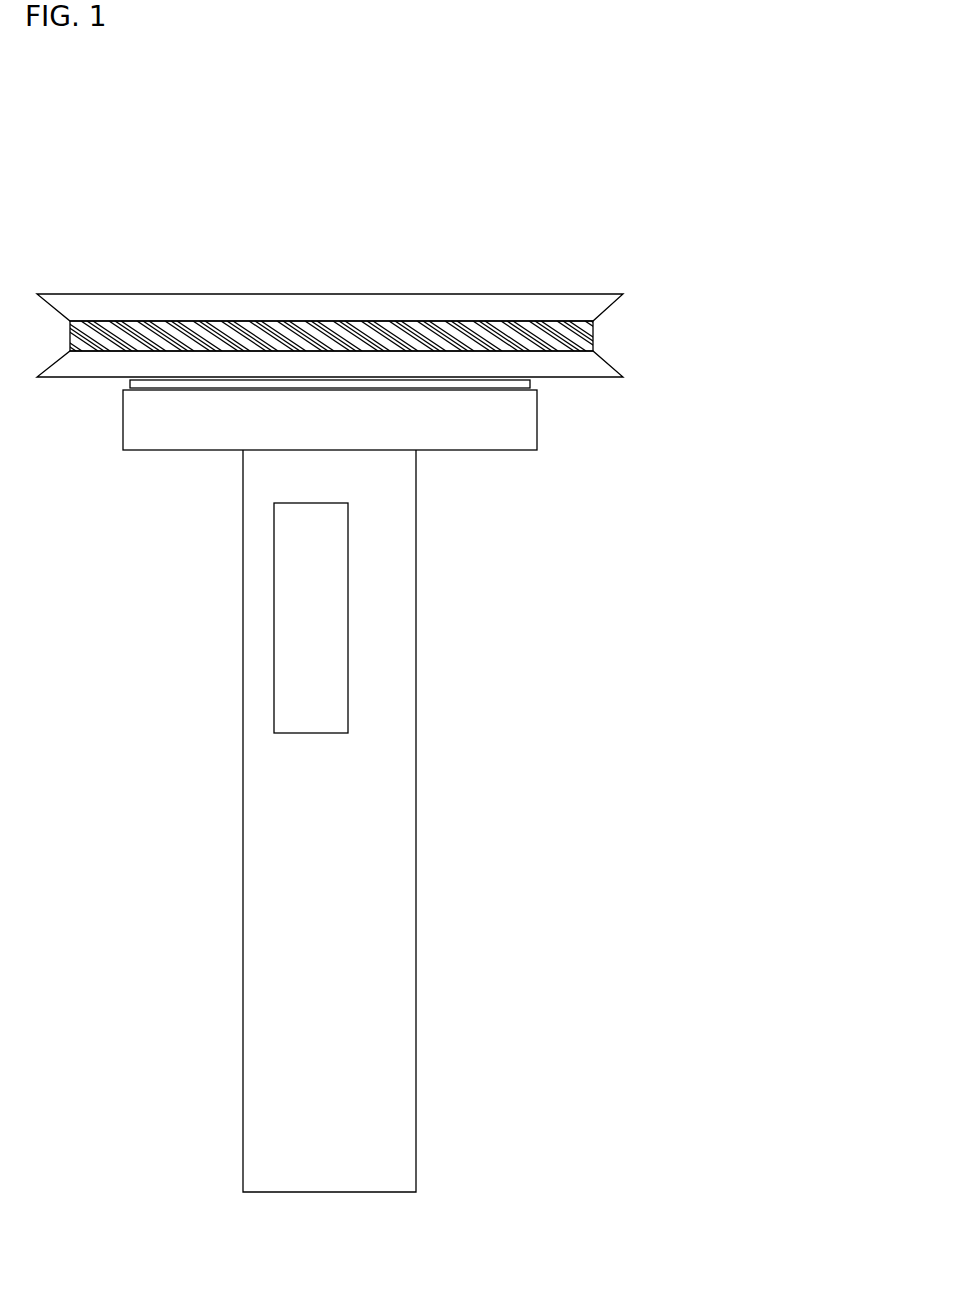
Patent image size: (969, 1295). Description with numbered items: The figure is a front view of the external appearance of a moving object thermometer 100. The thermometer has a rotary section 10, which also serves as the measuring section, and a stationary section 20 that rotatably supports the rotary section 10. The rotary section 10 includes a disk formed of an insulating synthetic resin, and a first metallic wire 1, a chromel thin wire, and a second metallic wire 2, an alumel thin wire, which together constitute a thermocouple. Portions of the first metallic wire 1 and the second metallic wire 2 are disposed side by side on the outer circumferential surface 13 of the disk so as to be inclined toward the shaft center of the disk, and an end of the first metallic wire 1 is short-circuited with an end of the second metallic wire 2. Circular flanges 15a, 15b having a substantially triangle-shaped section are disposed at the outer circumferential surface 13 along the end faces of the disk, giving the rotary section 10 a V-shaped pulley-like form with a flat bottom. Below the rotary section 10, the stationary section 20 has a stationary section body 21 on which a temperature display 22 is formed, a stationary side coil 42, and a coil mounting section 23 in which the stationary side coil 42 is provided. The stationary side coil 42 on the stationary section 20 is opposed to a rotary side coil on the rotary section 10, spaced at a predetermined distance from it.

The moving object thermometer 100 is at (225, 186).
The rotary section 10 is at (676, 233).
The first metallic wire 1 is at (267, 328).
The second metallic wire 2 is at (237, 326).
The outer circumferential surface 13 is at (592, 325).
The circular flange 15a is at (595, 368).
The circular flange 15b is at (582, 303).
The stationary side coil 42 is at (132, 384).
The stationary section 20 is at (684, 658).
The stationary section body 21 is at (388, 783).
The temperature display 22 is at (338, 648).
The coil mounting section 23 is at (493, 433).